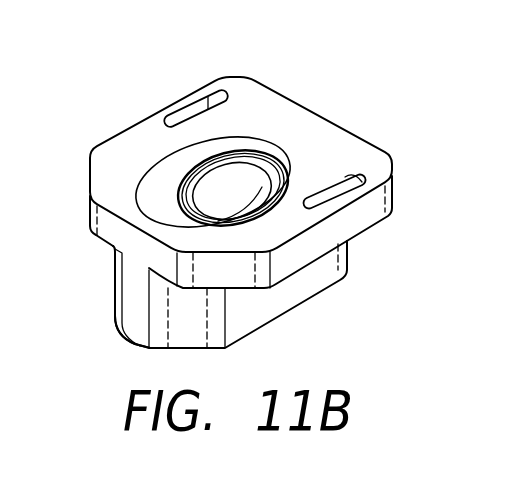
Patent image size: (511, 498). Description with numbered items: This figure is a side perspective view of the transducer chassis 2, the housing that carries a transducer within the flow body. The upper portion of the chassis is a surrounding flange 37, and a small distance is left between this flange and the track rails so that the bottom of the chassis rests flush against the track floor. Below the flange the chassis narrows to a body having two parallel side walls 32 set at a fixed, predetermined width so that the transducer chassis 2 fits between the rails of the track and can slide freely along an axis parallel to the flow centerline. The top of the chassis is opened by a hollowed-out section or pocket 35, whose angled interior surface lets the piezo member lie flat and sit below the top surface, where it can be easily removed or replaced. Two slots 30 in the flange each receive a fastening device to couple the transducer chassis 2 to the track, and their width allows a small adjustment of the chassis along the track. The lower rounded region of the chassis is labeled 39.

The transducer chassis 2 is at (278, 208).
The slot 30 is at (200, 110).
The side wall 32 is at (265, 300).
The pocket 35 is at (170, 188).
The surrounding flange 37 is at (313, 241).
The lower rounded portion 39 is at (128, 336).